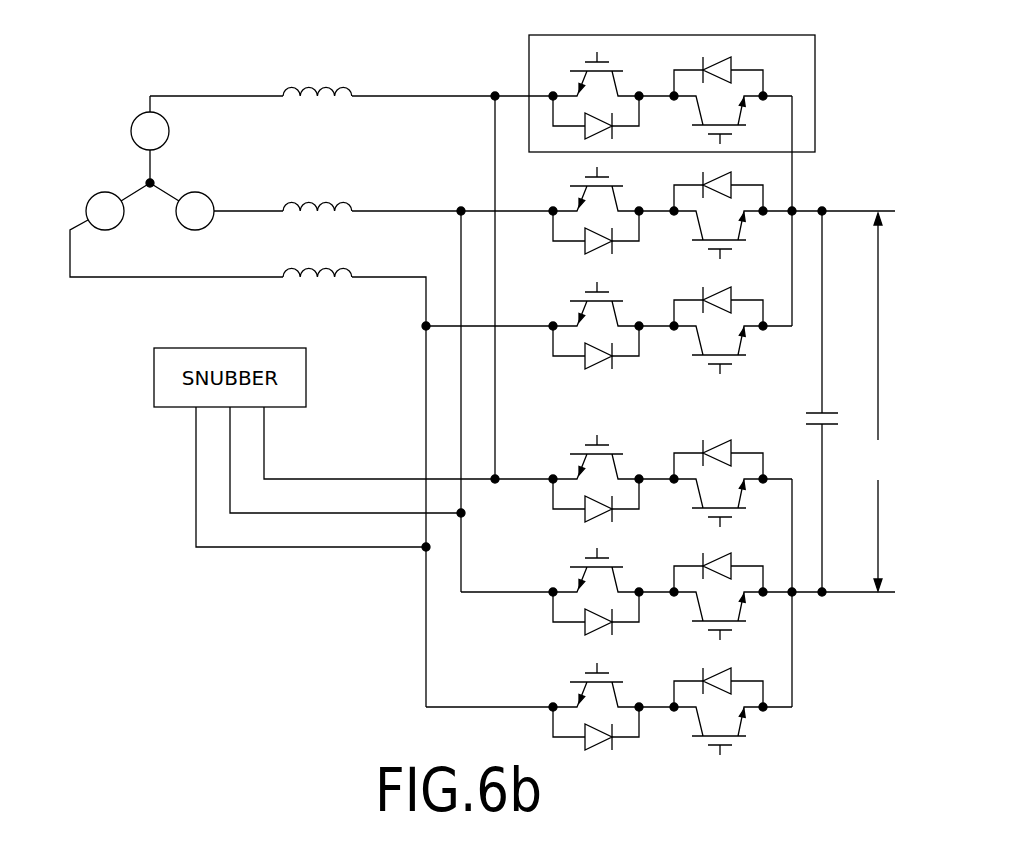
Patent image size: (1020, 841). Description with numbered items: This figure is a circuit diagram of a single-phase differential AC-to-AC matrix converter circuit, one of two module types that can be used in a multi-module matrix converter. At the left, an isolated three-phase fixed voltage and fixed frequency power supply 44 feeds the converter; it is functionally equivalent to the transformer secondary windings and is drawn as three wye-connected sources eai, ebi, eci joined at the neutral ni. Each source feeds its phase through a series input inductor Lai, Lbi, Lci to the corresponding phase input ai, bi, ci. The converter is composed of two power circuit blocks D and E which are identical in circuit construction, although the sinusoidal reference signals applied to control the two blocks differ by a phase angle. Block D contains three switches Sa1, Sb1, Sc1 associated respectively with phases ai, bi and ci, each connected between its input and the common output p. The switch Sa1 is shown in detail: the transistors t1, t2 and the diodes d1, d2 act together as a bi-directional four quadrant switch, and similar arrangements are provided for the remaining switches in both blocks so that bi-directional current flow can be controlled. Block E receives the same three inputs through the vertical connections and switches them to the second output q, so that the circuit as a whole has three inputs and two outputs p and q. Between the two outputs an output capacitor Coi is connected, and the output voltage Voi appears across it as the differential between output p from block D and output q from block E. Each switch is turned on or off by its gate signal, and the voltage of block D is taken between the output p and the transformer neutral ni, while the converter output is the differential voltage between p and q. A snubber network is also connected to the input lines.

The isolated three-phase fixed voltage and fixed frequency power supply 44 is at (163, 150).
The phase a source voltage eai is at (167, 139).
The phase b source voltage ebi is at (216, 200).
The phase c source voltage eci is at (176, 230).
The neutral of the transformer ni is at (135, 170).
The phase a input inductor Lai is at (351, 72).
The phase b input inductor Lbi is at (418, 188).
The phase c input inductor Lci is at (418, 469).
The phase a input ai is at (481, 274).
The phase b input bi is at (447, 388).
The phase c input ci is at (476, 312).
The power circuit block D is at (654, 81).
The switch Sa1 is at (650, 81).
The switch Sb1 is at (586, 252).
The switch Sc1 is at (586, 366).
The transistor t1 is at (535, 72).
The transistor t2 is at (800, 107).
The diode d1 is at (717, 55).
The diode d2 is at (572, 130).
The power circuit block E is at (809, 700).
The output p is at (841, 199).
The output q is at (841, 608).
The output capacitor Coi is at (832, 401).
The output voltage Voi is at (877, 402).